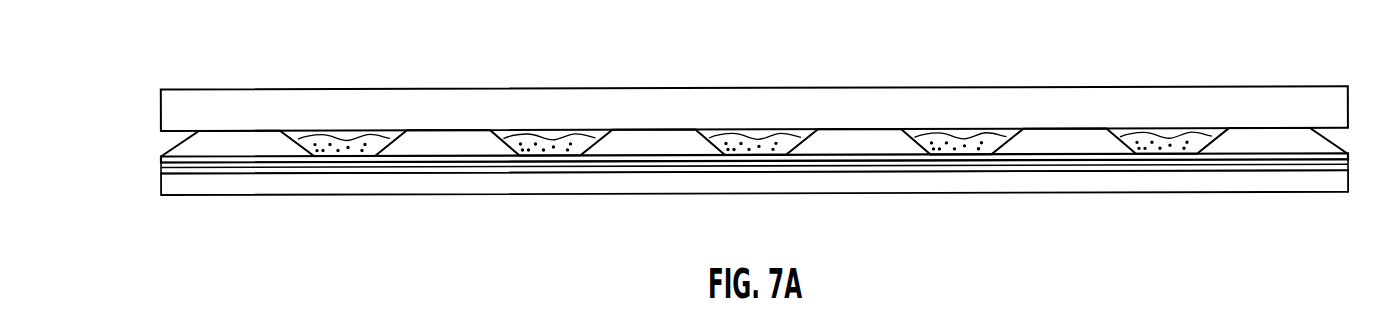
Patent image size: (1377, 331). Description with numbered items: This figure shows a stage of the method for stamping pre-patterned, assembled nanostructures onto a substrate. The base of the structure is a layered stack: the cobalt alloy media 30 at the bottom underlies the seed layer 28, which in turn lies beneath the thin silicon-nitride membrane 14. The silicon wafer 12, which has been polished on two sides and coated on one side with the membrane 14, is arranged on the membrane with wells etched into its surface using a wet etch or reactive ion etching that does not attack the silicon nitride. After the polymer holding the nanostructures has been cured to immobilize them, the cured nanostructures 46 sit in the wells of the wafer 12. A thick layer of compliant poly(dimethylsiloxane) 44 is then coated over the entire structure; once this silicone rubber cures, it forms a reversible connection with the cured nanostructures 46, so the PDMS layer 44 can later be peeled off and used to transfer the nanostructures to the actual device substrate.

The poly(dimethylsiloxane) layer 44 is at (418, 107).
The silicon wafer 12 is at (267, 140).
The cured nanostructures 46 is at (347, 139).
The silicon-nitride membrane 14 is at (160, 157).
The seed layer 28 is at (160, 167).
The cobalt alloy media 30 is at (160, 182).